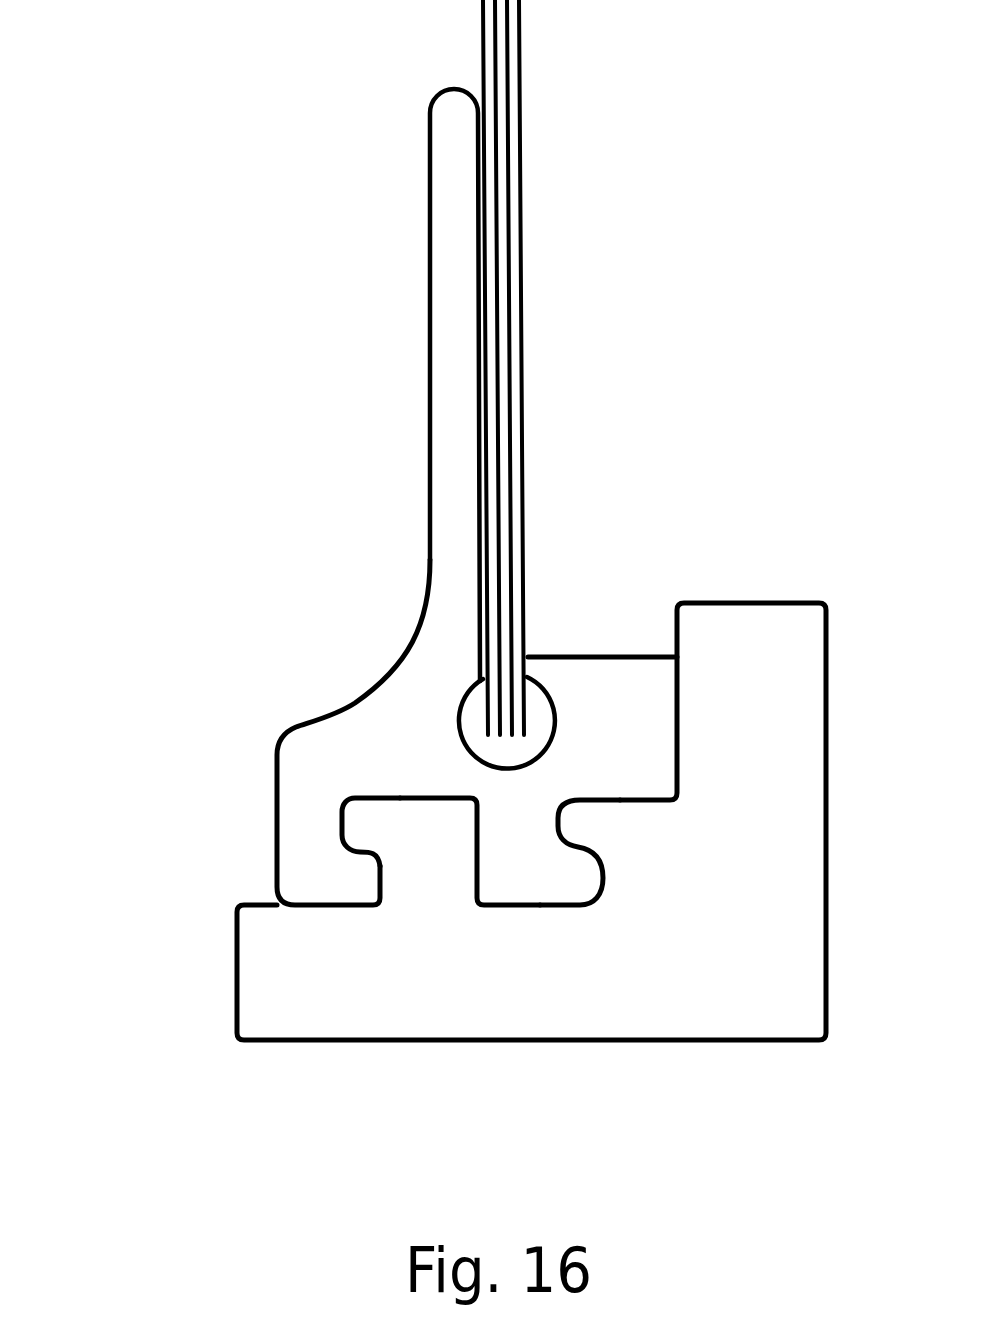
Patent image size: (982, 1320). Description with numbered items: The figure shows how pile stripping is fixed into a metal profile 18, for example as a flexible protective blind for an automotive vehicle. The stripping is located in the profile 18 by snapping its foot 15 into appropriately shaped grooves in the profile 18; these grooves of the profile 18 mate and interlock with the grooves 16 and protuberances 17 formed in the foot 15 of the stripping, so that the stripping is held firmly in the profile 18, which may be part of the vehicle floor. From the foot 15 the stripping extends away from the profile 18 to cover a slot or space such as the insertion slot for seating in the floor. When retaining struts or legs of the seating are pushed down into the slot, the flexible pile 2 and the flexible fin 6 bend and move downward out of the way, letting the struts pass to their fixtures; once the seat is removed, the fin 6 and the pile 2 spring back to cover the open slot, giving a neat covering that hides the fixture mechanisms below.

The pile 2 is at (510, 98).
The fin 6 is at (448, 300).
The foot 15 is at (377, 745).
The groove 16 is at (473, 855).
The protuberance 17 is at (327, 873).
The metal profile 18 is at (300, 960).